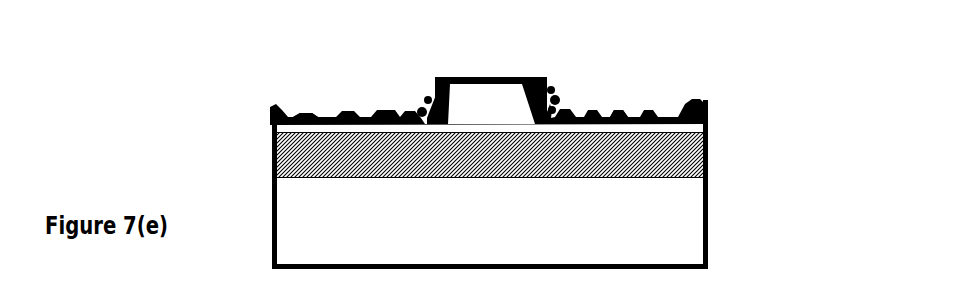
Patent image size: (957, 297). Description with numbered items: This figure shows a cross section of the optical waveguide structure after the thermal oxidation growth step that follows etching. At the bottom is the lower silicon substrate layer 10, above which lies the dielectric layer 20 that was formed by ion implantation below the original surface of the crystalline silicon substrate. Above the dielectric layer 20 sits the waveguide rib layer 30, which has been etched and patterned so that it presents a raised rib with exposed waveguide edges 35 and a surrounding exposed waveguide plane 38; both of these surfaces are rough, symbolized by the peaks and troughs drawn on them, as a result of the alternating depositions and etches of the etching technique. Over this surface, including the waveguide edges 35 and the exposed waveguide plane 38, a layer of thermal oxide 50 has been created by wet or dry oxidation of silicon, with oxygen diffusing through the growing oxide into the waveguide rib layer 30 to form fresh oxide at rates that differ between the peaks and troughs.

The lower silicon substrate layer 10 is at (697, 235).
The dielectric layer 20 is at (697, 158).
The waveguide rib layer 30 is at (707, 118).
The waveguide edges 35 is at (430, 95).
The exposed waveguide plane 38 is at (318, 117).
The layer of thermal oxide 50 is at (627, 112).